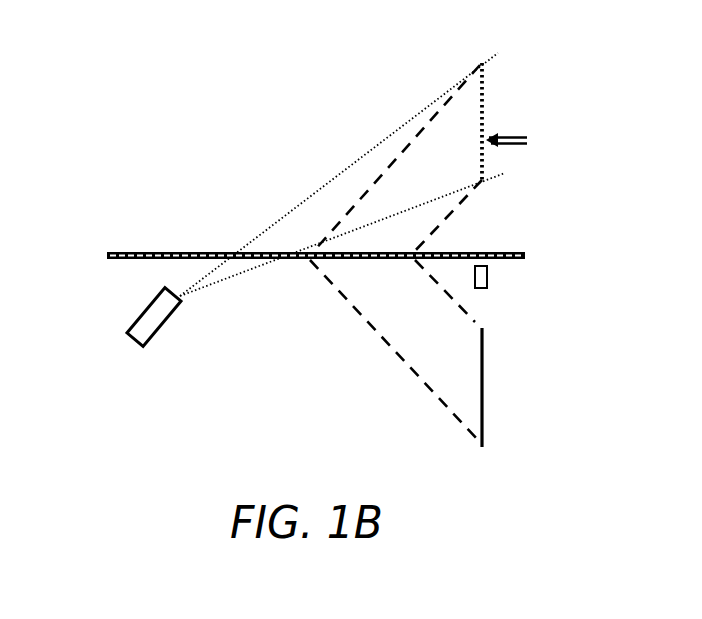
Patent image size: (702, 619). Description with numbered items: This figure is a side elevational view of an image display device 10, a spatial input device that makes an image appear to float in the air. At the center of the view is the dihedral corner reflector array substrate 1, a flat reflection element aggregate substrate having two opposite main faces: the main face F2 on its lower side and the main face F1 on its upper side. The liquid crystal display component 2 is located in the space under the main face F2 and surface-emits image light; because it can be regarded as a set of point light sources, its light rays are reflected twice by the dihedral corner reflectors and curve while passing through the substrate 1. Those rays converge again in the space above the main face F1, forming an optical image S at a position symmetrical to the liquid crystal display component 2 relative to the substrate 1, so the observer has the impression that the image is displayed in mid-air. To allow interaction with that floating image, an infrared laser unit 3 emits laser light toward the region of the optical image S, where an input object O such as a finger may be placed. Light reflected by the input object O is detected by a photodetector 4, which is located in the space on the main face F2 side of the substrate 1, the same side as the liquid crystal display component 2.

The image display device 10 is at (250, 94).
The dihedral corner reflector array substrate 1 is at (128, 252).
The liquid crystal display component 2 is at (484, 339).
The infrared laser unit 3 is at (128, 338).
The photodetector 4 is at (487, 277).
The optical image S is at (485, 72).
The input object O is at (519, 145).
The main face F1 is at (386, 253).
The main face F2 is at (373, 260).